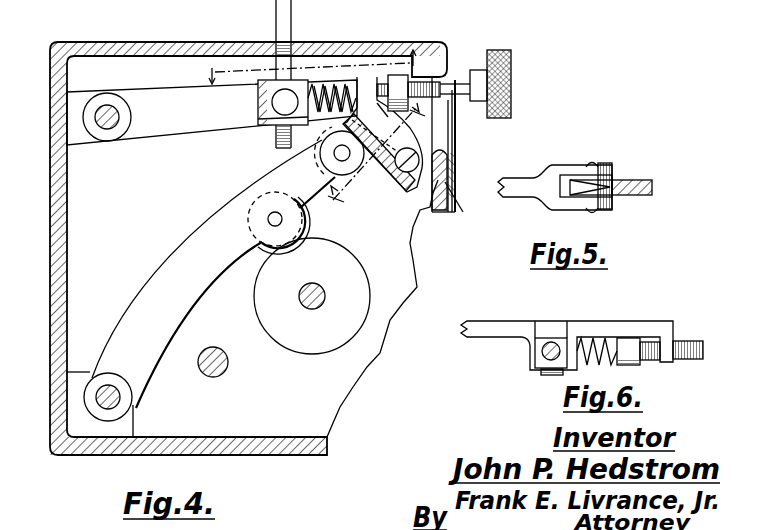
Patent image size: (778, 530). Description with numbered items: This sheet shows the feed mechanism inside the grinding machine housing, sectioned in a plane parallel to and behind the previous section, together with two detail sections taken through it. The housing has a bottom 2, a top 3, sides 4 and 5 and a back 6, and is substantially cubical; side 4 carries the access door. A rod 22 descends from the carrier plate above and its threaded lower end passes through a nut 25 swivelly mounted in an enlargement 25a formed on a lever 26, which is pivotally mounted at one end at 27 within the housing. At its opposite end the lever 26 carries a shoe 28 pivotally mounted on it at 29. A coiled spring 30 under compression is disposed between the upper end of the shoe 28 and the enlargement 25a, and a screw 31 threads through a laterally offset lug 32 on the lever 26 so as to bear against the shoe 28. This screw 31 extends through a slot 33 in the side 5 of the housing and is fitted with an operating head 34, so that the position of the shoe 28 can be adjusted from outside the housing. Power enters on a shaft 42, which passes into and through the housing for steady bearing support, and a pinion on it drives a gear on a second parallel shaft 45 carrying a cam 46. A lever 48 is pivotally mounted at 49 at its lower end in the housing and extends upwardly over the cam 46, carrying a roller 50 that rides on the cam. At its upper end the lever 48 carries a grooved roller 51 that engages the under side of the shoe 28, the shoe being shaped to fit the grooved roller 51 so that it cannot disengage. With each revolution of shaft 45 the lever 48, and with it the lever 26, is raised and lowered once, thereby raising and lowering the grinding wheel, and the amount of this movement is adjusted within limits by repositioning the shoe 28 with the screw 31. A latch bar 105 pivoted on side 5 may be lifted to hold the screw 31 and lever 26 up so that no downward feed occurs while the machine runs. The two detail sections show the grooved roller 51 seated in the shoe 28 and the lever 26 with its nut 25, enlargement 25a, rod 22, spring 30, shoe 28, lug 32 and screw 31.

In FIG. 4, the bottom 2 is at (272, 453).
In FIG. 4, the top 3 is at (352, 50).
In FIG. 4, the side 4 is at (53, 183).
In FIG. 4, the side 5 is at (399, 168).
In FIG. 4, the back 6 is at (357, 400).
In FIG. 4, the rod 22 is at (293, 22).
In FIG. 6, the rod 22 is at (556, 345).
In FIG. 4, the nut 25 is at (283, 105).
In FIG. 6, the nut 25 is at (543, 353).
In FIG. 4, the enlargement 25a is at (260, 88).
In FIG. 6, the enlargement 25a is at (540, 372).
In FIG. 4, the lever 26 is at (230, 128).
In FIG. 6, the lever 26 is at (487, 333).
In FIG. 4, the pivot 27 is at (107, 130).
In FIG. 4, the shoe 28 is at (390, 155).
In FIG. 5, the shoe 28 is at (643, 183).
In FIG. 6, the shoe 28 is at (630, 338).
In FIG. 4, the pivot 29 is at (420, 161).
In FIG. 4, the coiled spring 30 is at (338, 82).
In FIG. 6, the coiled spring 30 is at (605, 343).
In FIG. 4, the screw 31 is at (443, 82).
In FIG. 6, the screw 31 is at (684, 340).
In FIG. 4, the laterally offset lug 32 is at (398, 75).
In FIG. 6, the laterally offset lug 32 is at (665, 362).
In FIG. 4, the slot 33 is at (440, 130).
In FIG. 4, the operating head 34 is at (511, 92).
In FIG. 4, the shaft 42 is at (213, 378).
In FIG. 4, the shaft 45 is at (325, 292).
In FIG. 4, the cam 46 is at (324, 347).
In FIG. 4, the lever 48 is at (190, 263).
In FIG. 4, the pivot 49 is at (115, 392).
In FIG. 5, the pivot 49 is at (513, 193).
In FIG. 4, the roller 50 is at (266, 243).
In FIG. 4, the grooved roller 51 is at (330, 136).
In FIG. 5, the grooved roller 51 is at (604, 168).
In FIG. 4, the latch bar 105 is at (455, 153).